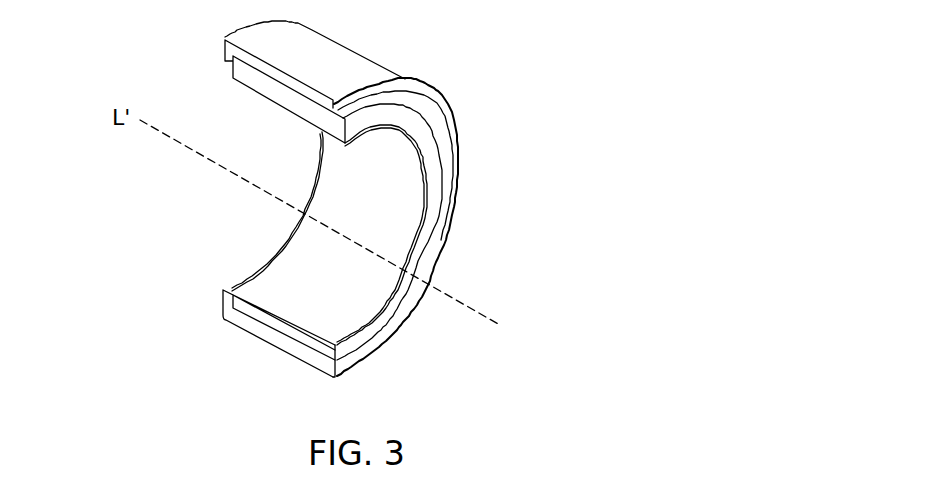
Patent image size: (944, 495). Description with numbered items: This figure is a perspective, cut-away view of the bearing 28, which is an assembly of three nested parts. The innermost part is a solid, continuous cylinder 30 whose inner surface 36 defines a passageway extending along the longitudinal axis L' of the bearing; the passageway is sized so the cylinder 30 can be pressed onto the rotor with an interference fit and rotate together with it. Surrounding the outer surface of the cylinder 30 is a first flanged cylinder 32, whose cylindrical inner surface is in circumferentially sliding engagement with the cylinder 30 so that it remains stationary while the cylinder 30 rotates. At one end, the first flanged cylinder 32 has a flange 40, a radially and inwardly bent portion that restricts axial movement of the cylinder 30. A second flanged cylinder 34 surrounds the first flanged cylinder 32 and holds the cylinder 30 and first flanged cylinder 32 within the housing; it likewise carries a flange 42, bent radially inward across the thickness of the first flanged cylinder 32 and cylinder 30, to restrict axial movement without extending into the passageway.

The bearing 28 is at (472, 340).
The cylinder 30 is at (243, 298).
The first flanged cylinder 32 is at (280, 334).
The second flanged cylinder 34 is at (327, 368).
The inner surface 36 is at (410, 192).
The flange 40 is at (340, 127).
The flange 42 is at (227, 60).